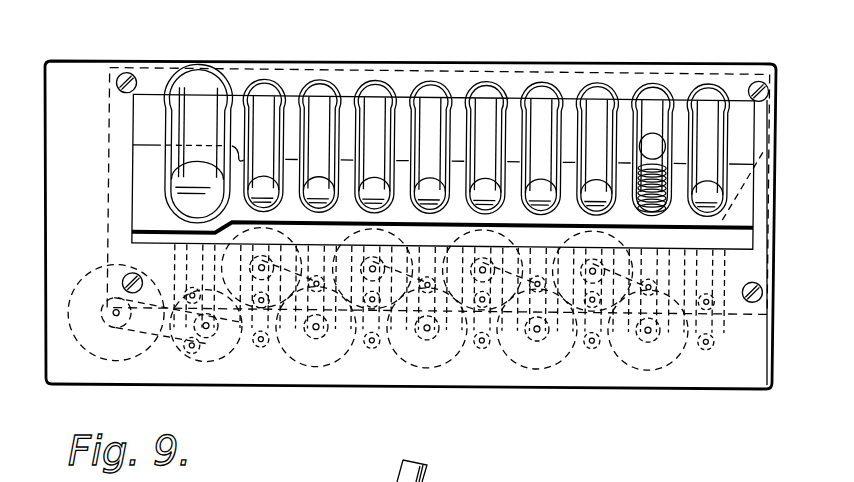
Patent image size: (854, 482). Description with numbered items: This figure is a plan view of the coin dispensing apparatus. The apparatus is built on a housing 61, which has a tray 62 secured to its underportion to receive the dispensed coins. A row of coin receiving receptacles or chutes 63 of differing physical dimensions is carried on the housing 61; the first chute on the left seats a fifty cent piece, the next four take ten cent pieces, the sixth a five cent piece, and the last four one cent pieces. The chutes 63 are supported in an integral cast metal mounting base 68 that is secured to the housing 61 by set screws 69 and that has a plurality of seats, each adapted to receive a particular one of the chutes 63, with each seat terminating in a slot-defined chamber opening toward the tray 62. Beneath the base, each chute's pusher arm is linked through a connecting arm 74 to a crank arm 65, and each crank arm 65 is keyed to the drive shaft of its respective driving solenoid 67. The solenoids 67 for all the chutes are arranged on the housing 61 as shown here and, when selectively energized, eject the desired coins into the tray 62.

The housing 61 is at (68, 61).
The tray 62 is at (777, 152).
The coin receiving receptacles or chutes 63 is at (254, 82).
The crank arm 65 is at (240, 350).
The driving solenoid 67 is at (622, 360).
The mounting base 68 is at (139, 154).
The set screws 69 is at (125, 73).
The connecting arm 74 is at (286, 343).